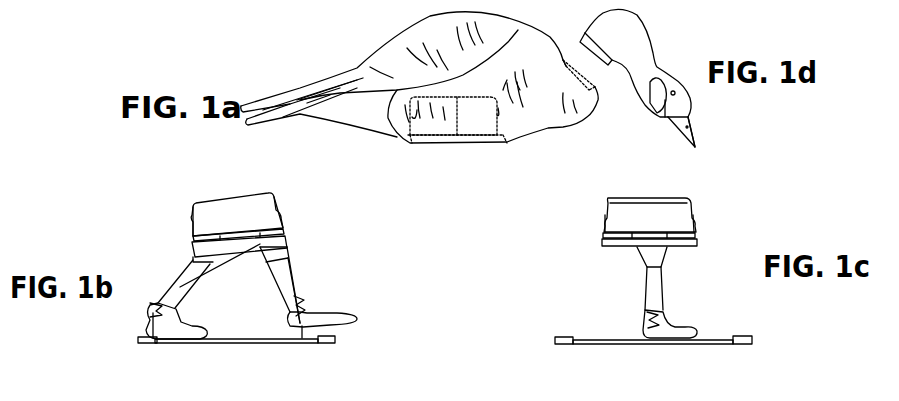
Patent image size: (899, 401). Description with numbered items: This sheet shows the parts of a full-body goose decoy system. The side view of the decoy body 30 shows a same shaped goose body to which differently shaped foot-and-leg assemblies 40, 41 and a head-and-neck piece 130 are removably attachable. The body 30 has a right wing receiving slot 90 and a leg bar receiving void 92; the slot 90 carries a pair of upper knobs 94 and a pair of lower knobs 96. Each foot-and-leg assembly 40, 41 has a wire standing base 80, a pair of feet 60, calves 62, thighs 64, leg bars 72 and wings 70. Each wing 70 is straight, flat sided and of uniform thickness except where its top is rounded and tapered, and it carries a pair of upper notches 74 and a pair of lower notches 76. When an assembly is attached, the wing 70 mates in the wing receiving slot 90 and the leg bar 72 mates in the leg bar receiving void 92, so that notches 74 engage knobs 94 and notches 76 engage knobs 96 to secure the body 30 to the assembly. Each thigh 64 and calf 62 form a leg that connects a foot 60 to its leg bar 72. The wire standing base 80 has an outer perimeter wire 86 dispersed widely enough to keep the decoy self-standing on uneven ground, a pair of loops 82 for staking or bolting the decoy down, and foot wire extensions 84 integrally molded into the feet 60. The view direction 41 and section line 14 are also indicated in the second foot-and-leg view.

In FIG. 1A, the full-body goose decoy body 30 is at (338, 68).
In FIG. 1D, the head-and-neck piece 130 is at (660, 38).
In FIG. 1B, the head-and-neck piece 130 is at (378, 400).
In FIG. 1C, the head-and-neck piece 130 is at (878, 393).
In FIG. 1A, the wing receiving slot 90 is at (436, 138).
In FIG. 1A, the leg bar receiving void 92 is at (466, 138).
In FIG. 1A, the upper knob 94 is at (414, 117).
In FIG. 1A, the lower knob 96 is at (411, 141).
In FIG. 1B, the foot-and-leg assembly 40 is at (378, 270).
In FIG. 1C, the foot-and-leg assembly 41 is at (548, 268).
In FIG. 1C, the section line 14 is at (703, 173).
In FIG. 1B, the wing 70 is at (226, 220).
In FIG. 1C, the wing 70 is at (633, 215).
In FIG. 1B, the upper notch 74 is at (192, 218).
In FIG. 1C, the upper notch 74 is at (605, 215).
In FIG. 1B, the lower notch 76 is at (195, 241).
In FIG. 1C, the lower notch 76 is at (604, 234).
In FIG. 1B, the leg bar 72 is at (206, 247).
In FIG. 1C, the leg bar 72 is at (620, 242).
In FIG. 1B, the thigh 64 is at (200, 262).
In FIG. 1C, the thigh 64 is at (667, 256).
In FIG. 1B, the calf 62 is at (190, 277).
In FIG. 1C, the calf 62 is at (657, 282).
In FIG. 1B, the foot 60 is at (181, 332).
In FIG. 1C, the foot 60 is at (677, 332).
In FIG. 1B, the foot wire extension 84 is at (151, 315).
In FIG. 1C, the foot wire extension 84 is at (645, 320).
In FIG. 1B, the loop 82 is at (147, 347).
In FIG. 1C, the loop 82 is at (565, 337).
In FIG. 1B, the outer perimeter wire 86 is at (209, 346).
In FIG. 1C, the outer perimeter wire 86 is at (603, 345).
In FIG. 1B, the wire standing base 80 is at (123, 351).
In FIG. 1C, the wire standing base 80 is at (748, 355).